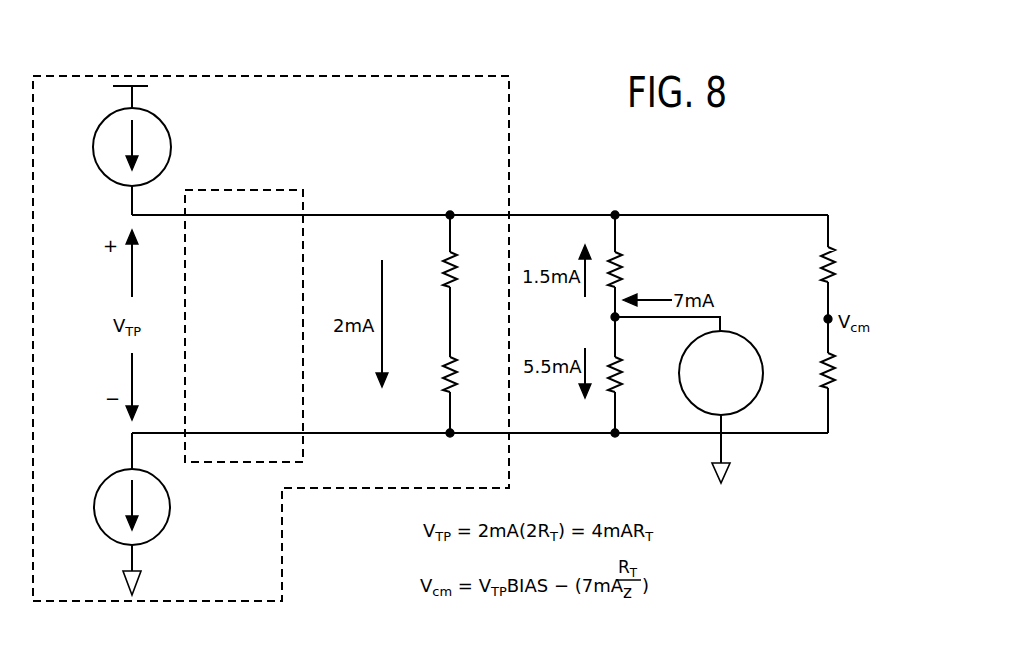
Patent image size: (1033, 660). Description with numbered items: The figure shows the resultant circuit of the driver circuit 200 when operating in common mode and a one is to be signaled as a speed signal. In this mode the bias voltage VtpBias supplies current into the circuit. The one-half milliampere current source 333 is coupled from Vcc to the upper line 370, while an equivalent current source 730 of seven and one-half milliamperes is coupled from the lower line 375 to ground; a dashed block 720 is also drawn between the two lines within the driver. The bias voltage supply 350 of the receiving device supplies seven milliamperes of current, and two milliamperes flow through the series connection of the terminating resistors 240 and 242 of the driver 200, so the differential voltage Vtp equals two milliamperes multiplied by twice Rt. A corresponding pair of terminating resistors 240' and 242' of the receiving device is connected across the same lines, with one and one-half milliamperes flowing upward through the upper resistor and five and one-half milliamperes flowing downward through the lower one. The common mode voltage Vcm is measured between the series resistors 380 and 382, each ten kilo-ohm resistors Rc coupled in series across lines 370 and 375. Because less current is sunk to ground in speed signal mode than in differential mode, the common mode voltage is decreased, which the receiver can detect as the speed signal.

The driver circuit 200 is at (276, 572).
The circuit block 720 is at (262, 196).
The 0.5 mA current source 333 is at (160, 118).
The line 370 is at (355, 214).
The line 375 is at (357, 435).
The terminating resistor 240 is at (468, 284).
The terminating resistor 242 is at (468, 389).
The termination resistor RT 240' is at (642, 284).
The termination resistor RT 242' is at (643, 397).
The bias voltage supply 350 is at (738, 341).
The resistor (Rc) 380 is at (821, 270).
The resistor (Rc) 382 is at (823, 375).
The equivalent current source 730 is at (160, 535).